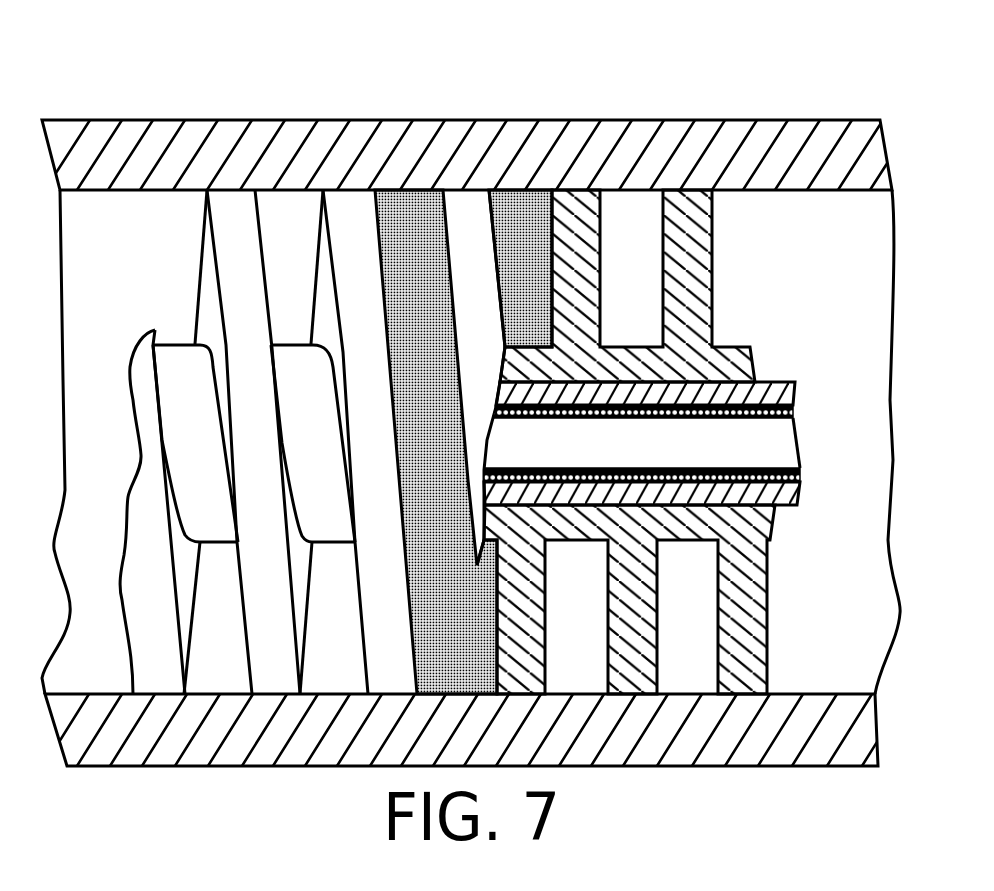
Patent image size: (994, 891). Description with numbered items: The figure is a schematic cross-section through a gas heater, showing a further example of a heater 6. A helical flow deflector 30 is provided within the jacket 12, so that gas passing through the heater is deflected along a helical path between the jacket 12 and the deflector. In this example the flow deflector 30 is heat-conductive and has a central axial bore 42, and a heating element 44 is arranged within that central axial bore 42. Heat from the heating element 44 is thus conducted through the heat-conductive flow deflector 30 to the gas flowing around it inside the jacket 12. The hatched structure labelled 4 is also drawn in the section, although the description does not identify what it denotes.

The heater 6 is at (686, 92).
The jacket 12 is at (835, 752).
The helical flow deflector 30 is at (277, 678).
The hatched support structure 4 is at (636, 442).
The central axial bore 42 is at (787, 452).
The heating element 44 is at (797, 504).